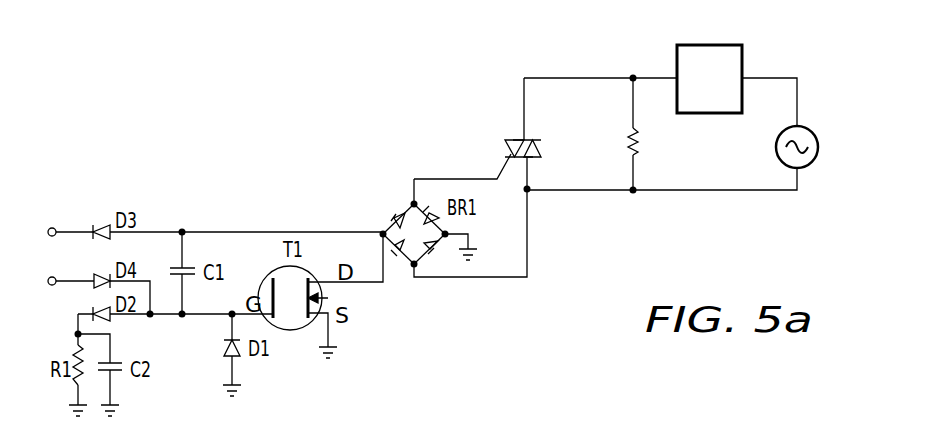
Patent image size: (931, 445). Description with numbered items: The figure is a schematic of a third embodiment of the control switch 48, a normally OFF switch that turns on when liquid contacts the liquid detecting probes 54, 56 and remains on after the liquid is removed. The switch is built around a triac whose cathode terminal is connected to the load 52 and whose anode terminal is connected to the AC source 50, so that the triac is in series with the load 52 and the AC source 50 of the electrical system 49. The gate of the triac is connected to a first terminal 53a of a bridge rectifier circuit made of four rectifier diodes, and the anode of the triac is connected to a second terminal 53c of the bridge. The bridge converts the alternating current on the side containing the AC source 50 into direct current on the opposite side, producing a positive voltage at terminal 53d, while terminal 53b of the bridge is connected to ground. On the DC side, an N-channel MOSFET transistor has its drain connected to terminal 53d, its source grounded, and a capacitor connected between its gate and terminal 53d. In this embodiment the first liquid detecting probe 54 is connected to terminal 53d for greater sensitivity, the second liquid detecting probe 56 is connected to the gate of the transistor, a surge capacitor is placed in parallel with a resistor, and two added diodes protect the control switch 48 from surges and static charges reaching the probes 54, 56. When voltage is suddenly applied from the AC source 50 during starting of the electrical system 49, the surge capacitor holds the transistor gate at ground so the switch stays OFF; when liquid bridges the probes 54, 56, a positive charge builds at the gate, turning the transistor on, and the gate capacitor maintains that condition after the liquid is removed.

The control switch 48 is at (488, 72).
The electrical system 49 is at (615, 62).
The AC source 50 is at (818, 147).
The load 52 is at (742, 62).
The first terminal of bridge rectifier circuit 53a is at (412, 203).
The terminal of bridge rectifier circuit 53b is at (452, 230).
The second terminal of bridge rectifier circuit 53c is at (412, 268).
The terminal of bridge rectifier circuit 53d is at (383, 233).
The first liquid detection probe 54 is at (52, 227).
The second liquid detection probe 56 is at (52, 286).